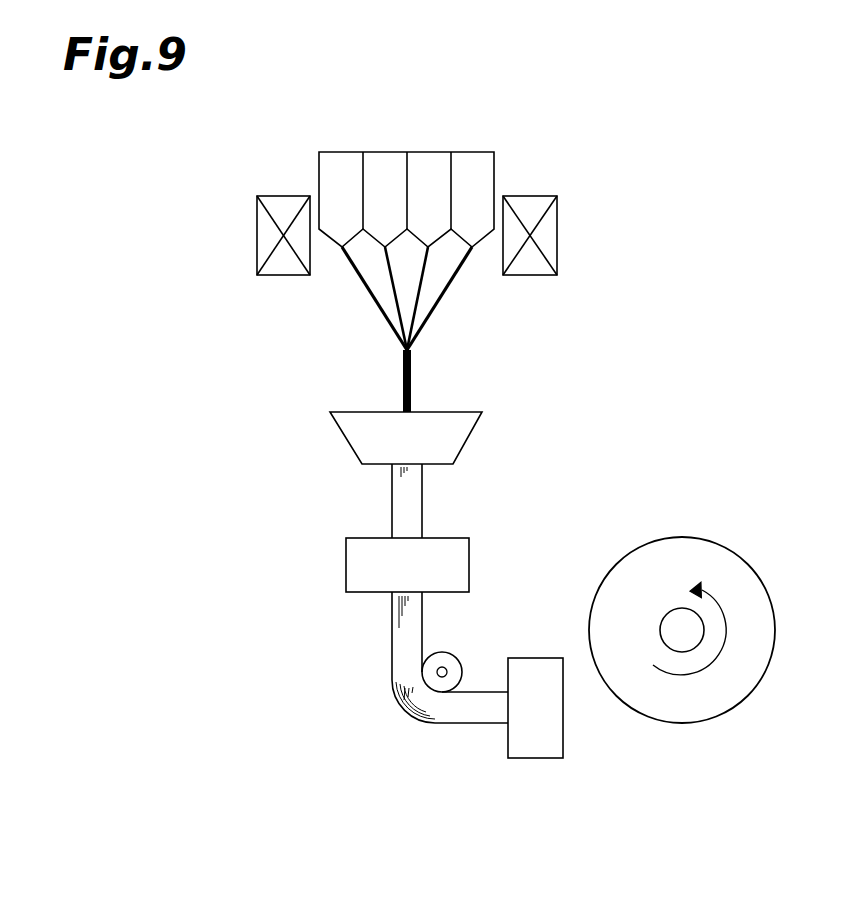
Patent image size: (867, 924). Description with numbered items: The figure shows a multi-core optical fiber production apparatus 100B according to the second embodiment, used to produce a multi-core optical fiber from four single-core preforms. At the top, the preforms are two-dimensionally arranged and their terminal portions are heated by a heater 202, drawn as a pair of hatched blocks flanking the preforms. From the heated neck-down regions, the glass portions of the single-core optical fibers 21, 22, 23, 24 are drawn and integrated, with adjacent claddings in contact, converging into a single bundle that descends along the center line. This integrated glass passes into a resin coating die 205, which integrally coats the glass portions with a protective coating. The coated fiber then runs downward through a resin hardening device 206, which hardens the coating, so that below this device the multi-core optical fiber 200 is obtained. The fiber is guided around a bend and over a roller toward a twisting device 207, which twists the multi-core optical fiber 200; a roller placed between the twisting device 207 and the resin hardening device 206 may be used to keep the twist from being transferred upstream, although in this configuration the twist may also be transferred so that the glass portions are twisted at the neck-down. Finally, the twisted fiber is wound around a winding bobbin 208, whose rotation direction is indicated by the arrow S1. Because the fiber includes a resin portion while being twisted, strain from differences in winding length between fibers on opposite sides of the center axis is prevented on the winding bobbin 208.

The multi-core optical fiber production apparatus 100B is at (577, 118).
The single-core optical fiber 21 is at (362, 289).
The single-core optical fiber 22 is at (396, 318).
The single-core optical fiber 23 is at (420, 292).
The single-core optical fiber 24 is at (428, 322).
The heater 202 is at (257, 238).
The resin coating die 205 is at (345, 440).
The multi-core optical fiber 200 is at (398, 504).
The resin hardening device 206 is at (346, 563).
The twisting device 207 is at (532, 658).
The winding bobbin 208 is at (679, 537).
The rotation direction S1 is at (727, 622).